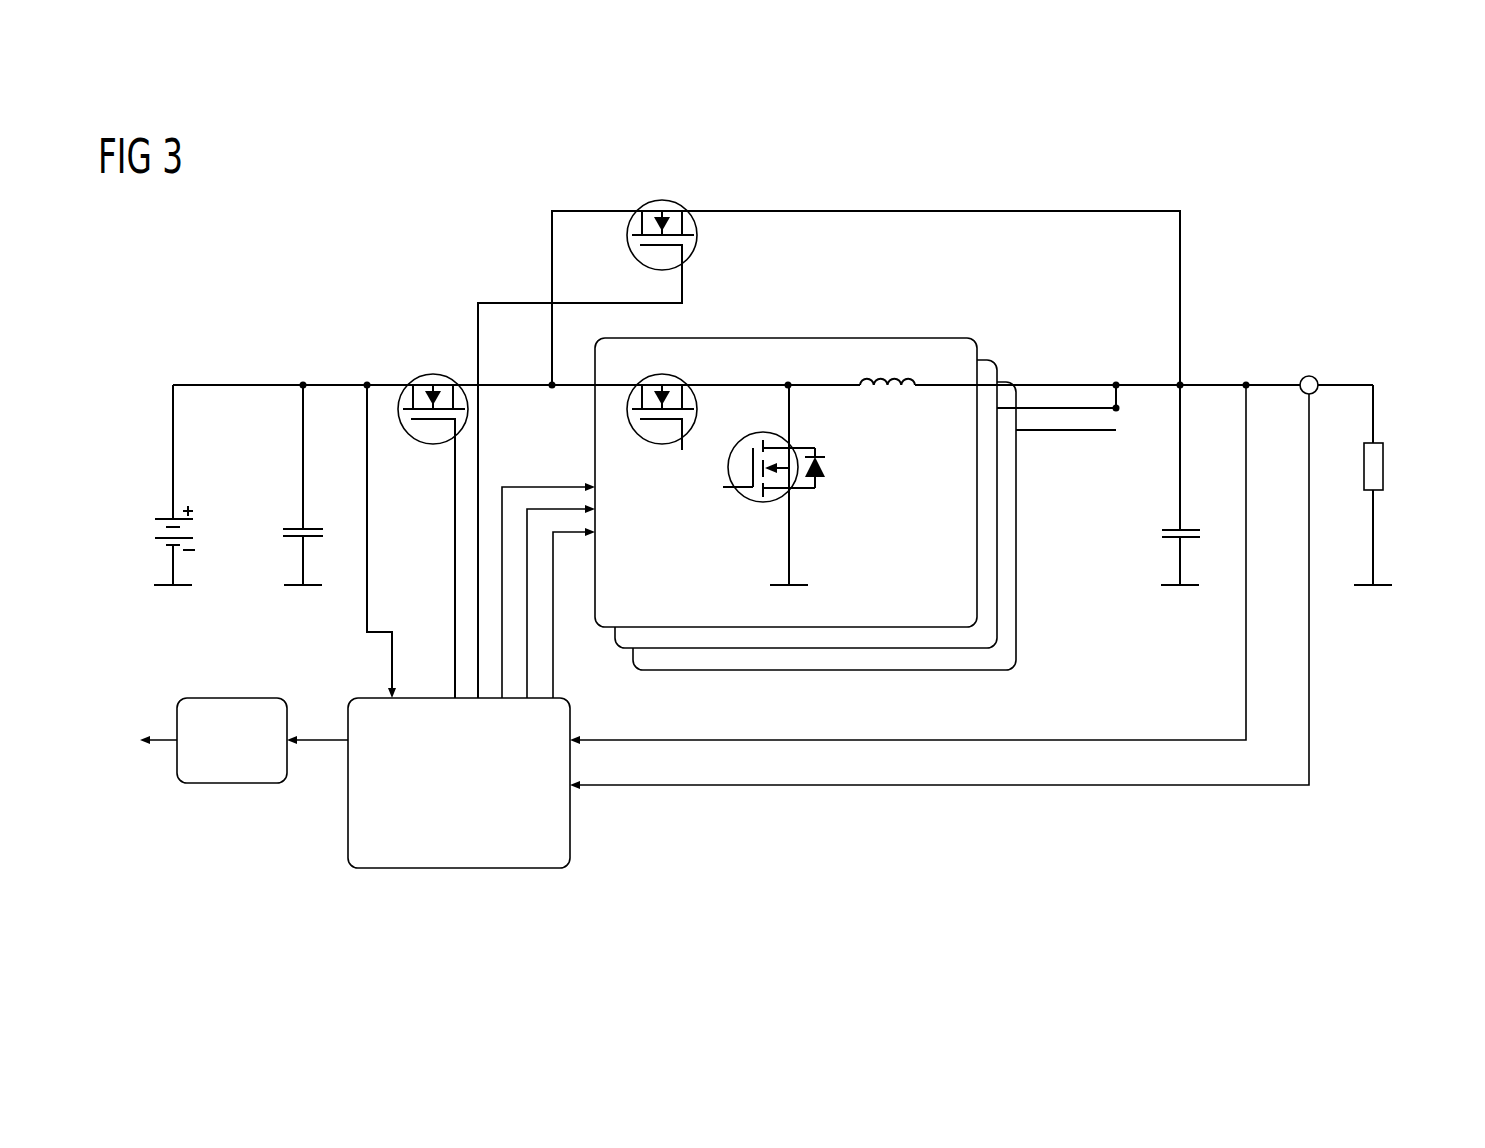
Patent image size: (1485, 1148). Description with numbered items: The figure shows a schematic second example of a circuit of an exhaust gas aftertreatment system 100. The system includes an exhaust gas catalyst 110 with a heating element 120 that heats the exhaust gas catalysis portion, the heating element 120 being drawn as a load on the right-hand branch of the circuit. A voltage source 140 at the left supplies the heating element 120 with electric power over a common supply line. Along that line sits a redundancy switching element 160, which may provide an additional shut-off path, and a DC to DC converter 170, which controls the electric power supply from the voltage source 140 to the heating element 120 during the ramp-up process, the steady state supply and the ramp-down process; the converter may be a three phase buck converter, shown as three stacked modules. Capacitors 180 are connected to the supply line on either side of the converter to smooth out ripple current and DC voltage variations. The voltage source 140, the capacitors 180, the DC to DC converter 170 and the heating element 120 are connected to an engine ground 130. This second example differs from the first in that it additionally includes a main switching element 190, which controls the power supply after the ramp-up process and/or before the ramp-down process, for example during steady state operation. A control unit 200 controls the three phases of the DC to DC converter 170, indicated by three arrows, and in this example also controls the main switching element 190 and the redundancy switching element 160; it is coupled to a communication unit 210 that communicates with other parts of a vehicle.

The exhaust gas aftertreatment system 100 is at (1380, 216).
The exhaust gas catalyst 110 is at (1380, 353).
The heating element 120 is at (1385, 470).
The engine ground 130 is at (162, 587).
The voltage source 140 is at (148, 480).
The redundancy switching element 160 is at (433, 373).
The DC to DC converter 170 is at (860, 318).
The capacitors 180 is at (292, 529).
The main switching element 190 is at (694, 258).
The control unit 200 is at (485, 739).
The communication unit 210 is at (256, 739).